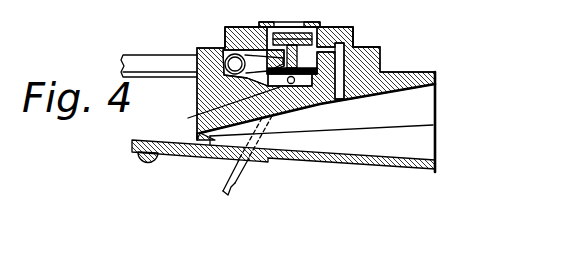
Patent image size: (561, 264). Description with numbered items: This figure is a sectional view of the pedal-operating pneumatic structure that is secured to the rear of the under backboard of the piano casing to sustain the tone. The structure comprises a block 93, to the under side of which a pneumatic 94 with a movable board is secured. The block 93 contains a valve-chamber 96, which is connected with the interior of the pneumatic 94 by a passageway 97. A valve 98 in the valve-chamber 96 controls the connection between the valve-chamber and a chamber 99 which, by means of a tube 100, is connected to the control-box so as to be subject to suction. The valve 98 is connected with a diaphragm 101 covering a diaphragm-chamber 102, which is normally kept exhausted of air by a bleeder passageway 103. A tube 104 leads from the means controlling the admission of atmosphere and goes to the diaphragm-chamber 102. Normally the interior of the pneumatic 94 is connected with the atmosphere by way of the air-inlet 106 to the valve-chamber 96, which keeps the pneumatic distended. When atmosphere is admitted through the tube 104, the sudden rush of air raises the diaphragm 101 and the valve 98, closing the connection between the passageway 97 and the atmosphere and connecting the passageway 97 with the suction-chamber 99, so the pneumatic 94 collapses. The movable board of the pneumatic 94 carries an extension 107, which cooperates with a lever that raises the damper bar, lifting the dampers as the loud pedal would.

The block 93 is at (382, 53).
The pneumatic 94 is at (410, 145).
The valve-chamber 96 is at (355, 39).
The passageway 97 is at (343, 90).
The valve 98 is at (228, 29).
The chamber 99 is at (228, 47).
The tube 100 is at (170, 73).
The diaphragm 101 is at (304, 105).
The diaphragm-chamber 102 is at (214, 111).
The bleeder passageway 103 is at (268, 81).
The tube 104 is at (238, 185).
The air-inlet 106 is at (302, 23).
The extension 107 is at (175, 153).